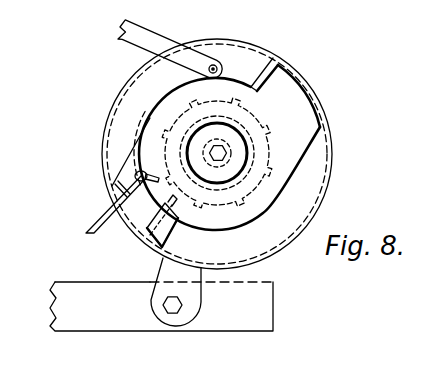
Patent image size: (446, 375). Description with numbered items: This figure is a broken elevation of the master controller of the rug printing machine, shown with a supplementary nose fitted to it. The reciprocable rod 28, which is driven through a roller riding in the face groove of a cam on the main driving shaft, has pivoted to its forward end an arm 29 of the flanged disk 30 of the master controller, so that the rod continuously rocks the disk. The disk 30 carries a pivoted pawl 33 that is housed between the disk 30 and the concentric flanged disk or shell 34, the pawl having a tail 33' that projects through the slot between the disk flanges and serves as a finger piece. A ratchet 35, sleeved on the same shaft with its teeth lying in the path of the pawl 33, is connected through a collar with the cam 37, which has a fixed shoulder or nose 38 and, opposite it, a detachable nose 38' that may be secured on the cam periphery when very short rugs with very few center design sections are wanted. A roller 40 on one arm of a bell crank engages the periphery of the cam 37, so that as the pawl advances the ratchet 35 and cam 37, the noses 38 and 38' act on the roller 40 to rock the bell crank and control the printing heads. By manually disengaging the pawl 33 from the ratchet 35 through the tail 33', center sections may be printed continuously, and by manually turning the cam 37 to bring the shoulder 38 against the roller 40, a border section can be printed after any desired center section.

The reciprocable rod 28 is at (291, 347).
The arm 29 is at (168, 274).
The flanged disk 30 is at (322, 160).
The pawl 33 is at (117, 157).
The tail 33' is at (103, 216).
The flanged disk or shell 34 is at (312, 187).
The ratchet 35 is at (261, 128).
The cam 37 is at (268, 62).
The fixed shoulder or nose 38 is at (314, 82).
The detachable nose 38' is at (136, 232).
The roller 40 is at (212, 64).